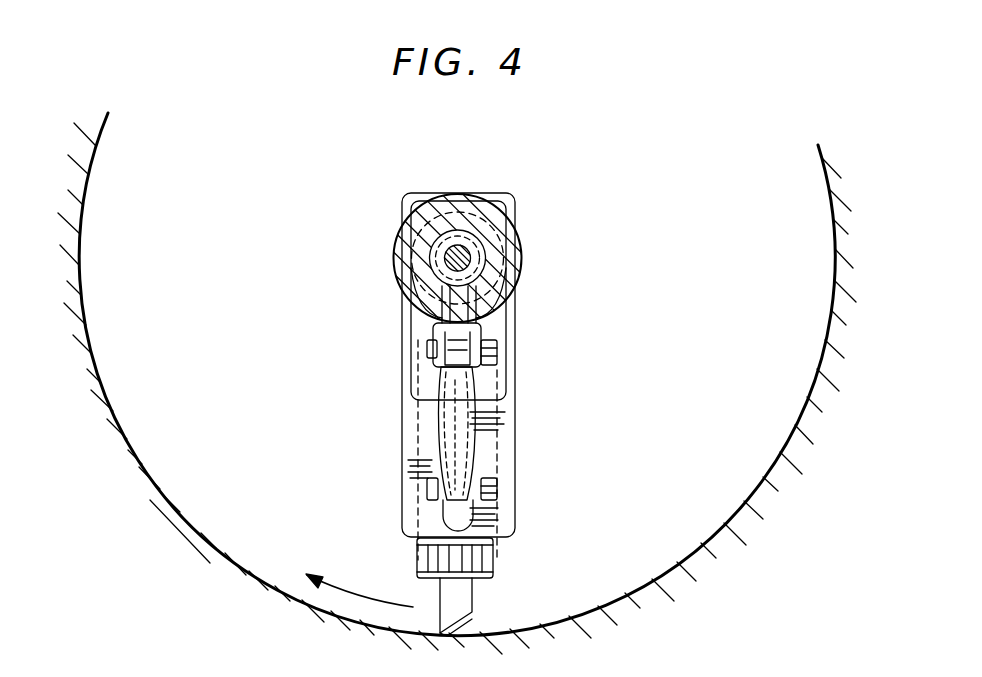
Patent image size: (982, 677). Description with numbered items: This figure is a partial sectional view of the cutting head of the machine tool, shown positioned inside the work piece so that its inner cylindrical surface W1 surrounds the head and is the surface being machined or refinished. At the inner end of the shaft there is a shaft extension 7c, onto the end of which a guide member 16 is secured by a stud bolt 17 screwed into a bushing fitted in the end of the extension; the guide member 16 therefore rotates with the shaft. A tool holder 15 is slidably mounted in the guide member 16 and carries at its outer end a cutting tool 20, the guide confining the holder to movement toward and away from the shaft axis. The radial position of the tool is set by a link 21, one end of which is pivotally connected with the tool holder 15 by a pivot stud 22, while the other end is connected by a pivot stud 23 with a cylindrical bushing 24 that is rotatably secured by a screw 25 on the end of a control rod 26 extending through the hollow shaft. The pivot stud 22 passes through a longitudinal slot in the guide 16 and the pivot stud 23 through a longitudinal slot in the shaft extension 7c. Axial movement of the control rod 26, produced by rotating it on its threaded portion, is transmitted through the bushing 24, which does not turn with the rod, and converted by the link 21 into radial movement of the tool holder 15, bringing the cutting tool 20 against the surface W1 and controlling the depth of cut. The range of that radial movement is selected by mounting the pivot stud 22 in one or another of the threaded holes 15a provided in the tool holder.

The inner cylindrical surface W1 is at (797, 417).
The guide member 16 is at (402, 335).
The shaft extension 7c is at (396, 243).
The stud bolt 17 is at (433, 200).
The cylindrical bushing 24 is at (458, 236).
The screw 25 is at (485, 247).
The control rod 26 is at (470, 258).
The pivot stud 23 is at (477, 332).
The link 21 is at (470, 415).
The threaded holes 15a is at (450, 444).
The pivot stud 22 is at (478, 474).
The tool holder 15 is at (418, 553).
The cutting tool 20 is at (465, 595).